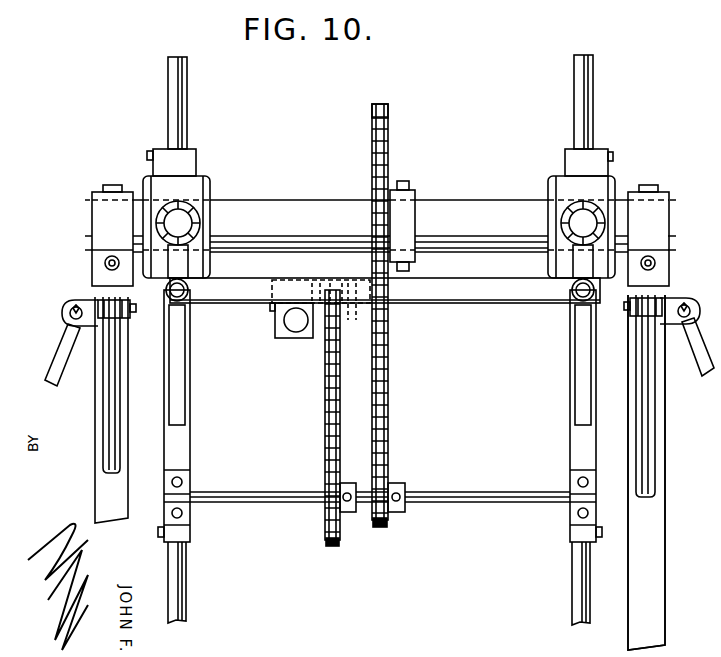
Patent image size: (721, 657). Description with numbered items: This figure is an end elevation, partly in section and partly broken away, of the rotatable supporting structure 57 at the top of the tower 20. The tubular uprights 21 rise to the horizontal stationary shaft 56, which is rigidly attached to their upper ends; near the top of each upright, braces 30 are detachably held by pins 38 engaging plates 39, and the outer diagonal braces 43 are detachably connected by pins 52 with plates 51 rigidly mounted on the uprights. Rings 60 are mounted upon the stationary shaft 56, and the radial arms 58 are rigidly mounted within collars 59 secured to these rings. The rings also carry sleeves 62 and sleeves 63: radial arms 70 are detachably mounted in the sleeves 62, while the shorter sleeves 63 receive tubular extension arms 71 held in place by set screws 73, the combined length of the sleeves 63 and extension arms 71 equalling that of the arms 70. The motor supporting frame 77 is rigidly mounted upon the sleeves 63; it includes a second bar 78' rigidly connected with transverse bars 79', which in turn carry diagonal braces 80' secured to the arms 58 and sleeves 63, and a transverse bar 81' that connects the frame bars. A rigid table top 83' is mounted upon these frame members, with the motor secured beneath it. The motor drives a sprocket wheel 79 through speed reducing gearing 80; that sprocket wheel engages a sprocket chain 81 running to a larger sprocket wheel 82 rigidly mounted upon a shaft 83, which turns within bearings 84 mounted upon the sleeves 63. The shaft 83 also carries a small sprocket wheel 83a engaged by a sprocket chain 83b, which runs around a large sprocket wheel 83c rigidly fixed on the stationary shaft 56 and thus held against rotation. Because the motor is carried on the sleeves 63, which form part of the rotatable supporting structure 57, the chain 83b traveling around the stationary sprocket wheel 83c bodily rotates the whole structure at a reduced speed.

The tower 20 is at (672, 478).
The uprights 21 is at (97, 426).
The braces 30 is at (108, 396).
The pins 38 is at (129, 312).
The plates 39 is at (114, 329).
The outer diagonal braces 43 is at (57, 350).
The plates 51 is at (66, 312).
The pins 52 is at (84, 300).
The stationary shaft 56 is at (441, 210).
The rotatable supporting structure 57 is at (144, 165).
The radial arms 58 is at (191, 205).
The collars 59 is at (211, 213).
The rings 60 is at (206, 178).
The sleeves 62 is at (184, 161).
The sleeves 63 is at (191, 452).
The radial arms 70 is at (188, 96).
The extension arms 71 is at (188, 597).
The set screws 73 is at (598, 538).
The motor supporting frame 77 is at (451, 313).
The second bar 78' is at (385, 317).
The sprocket wheel 79 is at (334, 278).
The transverse bars 79' is at (380, 313).
The speed reducing gearing 80 is at (291, 334).
The diagonal braces 80' is at (380, 261).
The sprocket chain 81 is at (318, 415).
The transverse bar 81' is at (360, 308).
The larger sprocket wheel 82 is at (332, 547).
The shaft 83 is at (380, 510).
The table top 83' is at (321, 278).
The small sprocket wheel 83a is at (382, 529).
The sprocket chain 83b is at (390, 428).
The large sprocket wheel 83c is at (390, 134).
The bearings 84 is at (191, 530).